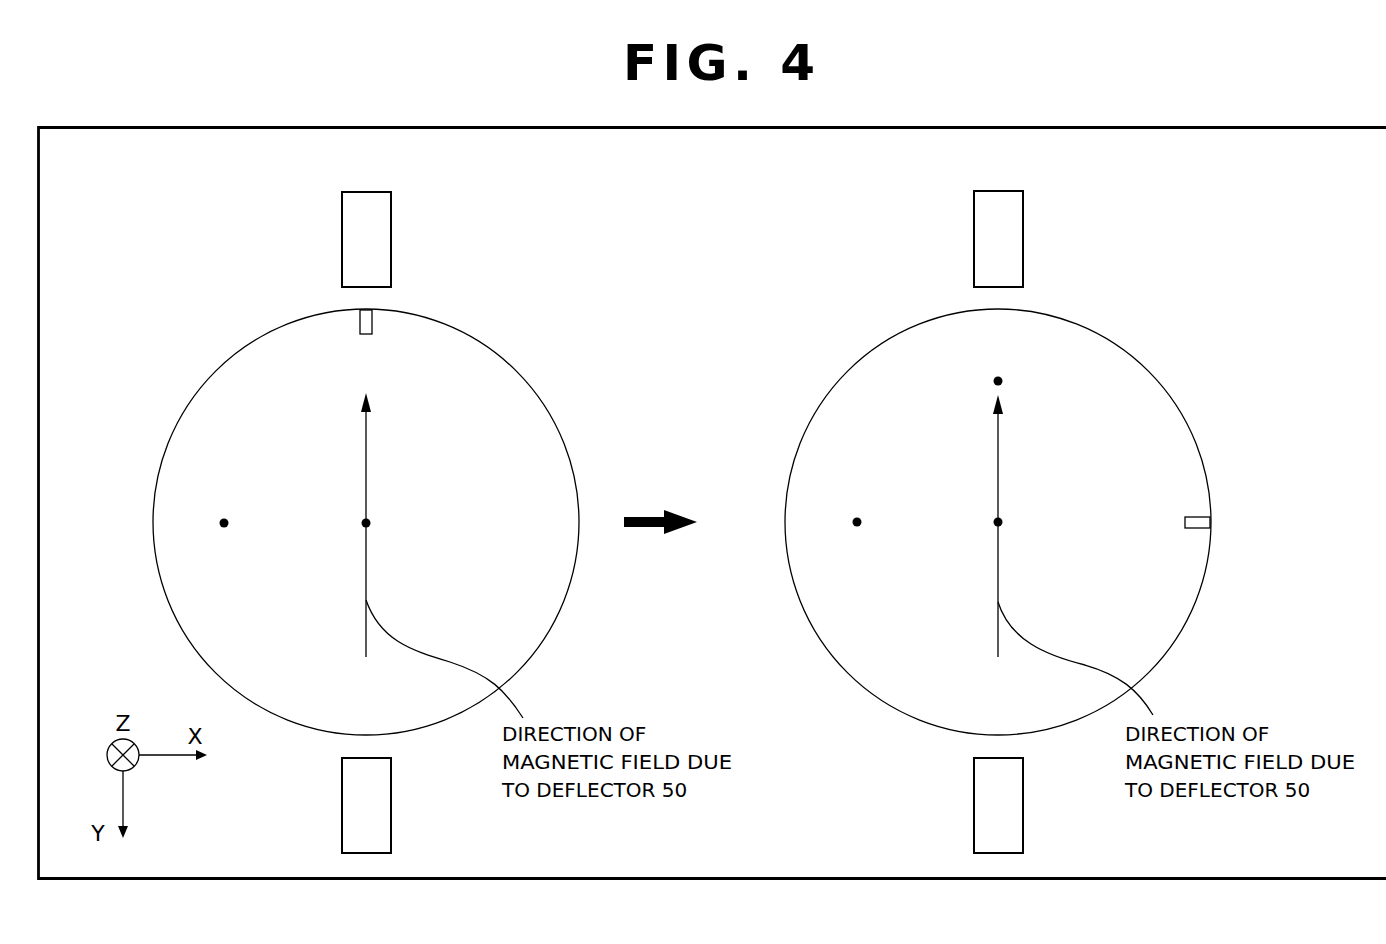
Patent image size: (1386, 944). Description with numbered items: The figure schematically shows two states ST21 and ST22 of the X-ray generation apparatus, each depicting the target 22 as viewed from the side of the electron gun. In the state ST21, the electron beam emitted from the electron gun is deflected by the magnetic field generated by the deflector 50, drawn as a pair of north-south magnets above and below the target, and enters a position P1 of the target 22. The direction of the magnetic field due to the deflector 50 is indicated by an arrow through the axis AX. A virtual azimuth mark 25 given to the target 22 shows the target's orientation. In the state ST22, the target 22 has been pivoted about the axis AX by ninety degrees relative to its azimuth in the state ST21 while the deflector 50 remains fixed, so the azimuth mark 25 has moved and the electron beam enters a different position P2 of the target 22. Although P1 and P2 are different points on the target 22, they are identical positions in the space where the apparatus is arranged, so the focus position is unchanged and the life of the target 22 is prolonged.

The target 22 is at (522, 367).
The virtual azimuth mark 25 is at (372, 316).
The deflector 50 is at (391, 230).
The axis AX is at (371, 519).
The position P1 is at (220, 521).
The position P2 is at (853, 521).
The state ST21 is at (126, 406).
The state ST22 is at (781, 404).